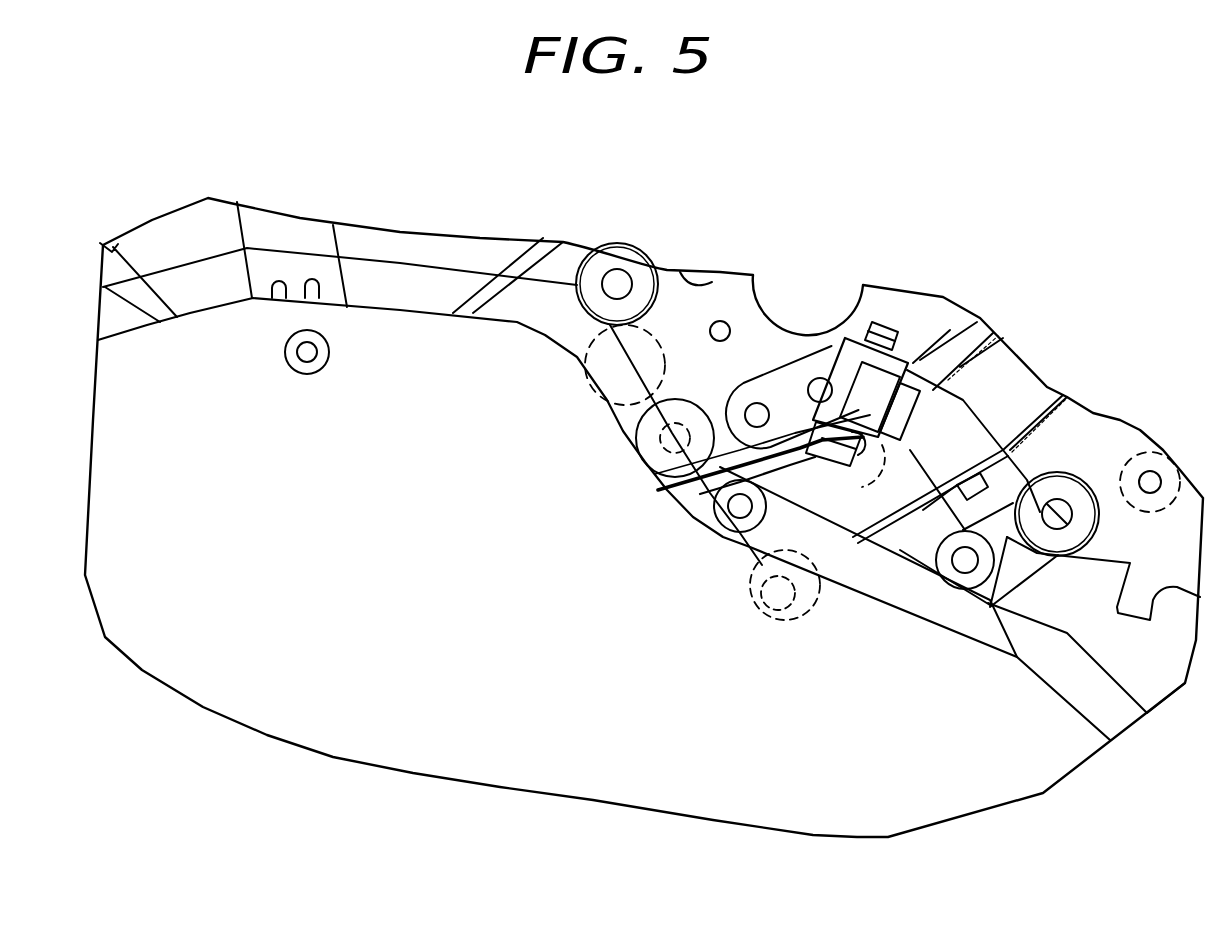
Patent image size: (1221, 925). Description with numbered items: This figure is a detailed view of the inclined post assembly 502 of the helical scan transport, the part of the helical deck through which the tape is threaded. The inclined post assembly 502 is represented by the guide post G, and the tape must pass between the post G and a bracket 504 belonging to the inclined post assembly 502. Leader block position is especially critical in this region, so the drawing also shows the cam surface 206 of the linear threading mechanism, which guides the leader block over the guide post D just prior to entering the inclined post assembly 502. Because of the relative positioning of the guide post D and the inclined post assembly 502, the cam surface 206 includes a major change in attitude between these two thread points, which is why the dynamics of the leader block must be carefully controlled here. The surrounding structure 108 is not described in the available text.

The frame side plate 108 is at (475, 598).
The cam surface 206 is at (930, 648).
The inclined post assembly 502 is at (801, 462).
The bracket 504 is at (848, 457).
The guide post D is at (307, 374).
The guide post G is at (760, 610).